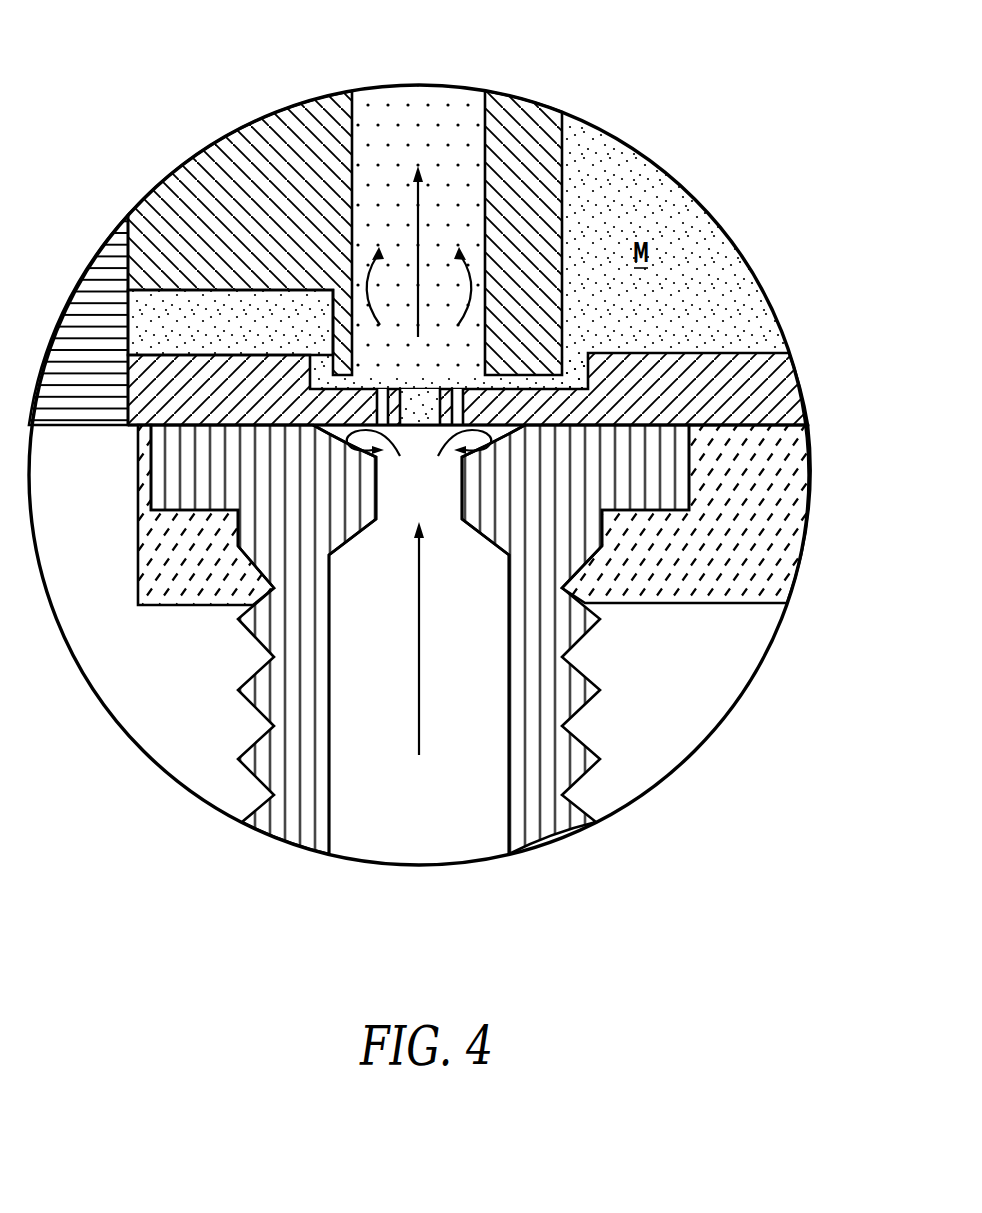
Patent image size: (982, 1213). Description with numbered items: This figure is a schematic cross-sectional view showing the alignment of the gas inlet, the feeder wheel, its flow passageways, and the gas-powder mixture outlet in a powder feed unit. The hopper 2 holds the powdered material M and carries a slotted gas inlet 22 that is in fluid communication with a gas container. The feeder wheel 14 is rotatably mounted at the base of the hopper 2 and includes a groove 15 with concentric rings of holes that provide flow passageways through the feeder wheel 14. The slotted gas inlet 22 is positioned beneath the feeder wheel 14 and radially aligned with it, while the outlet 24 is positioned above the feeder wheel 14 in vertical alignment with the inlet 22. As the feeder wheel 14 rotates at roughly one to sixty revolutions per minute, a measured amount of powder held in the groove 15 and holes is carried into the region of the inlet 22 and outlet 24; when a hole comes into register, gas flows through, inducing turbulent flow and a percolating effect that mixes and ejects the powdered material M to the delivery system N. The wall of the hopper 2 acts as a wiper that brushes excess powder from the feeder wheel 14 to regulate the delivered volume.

The hopper 2 is at (563, 185).
The feeder wheel 14 is at (743, 350).
The groove 15 is at (788, 548).
The slotted gas inlet 22 is at (400, 488).
The outlet 24 is at (428, 125).